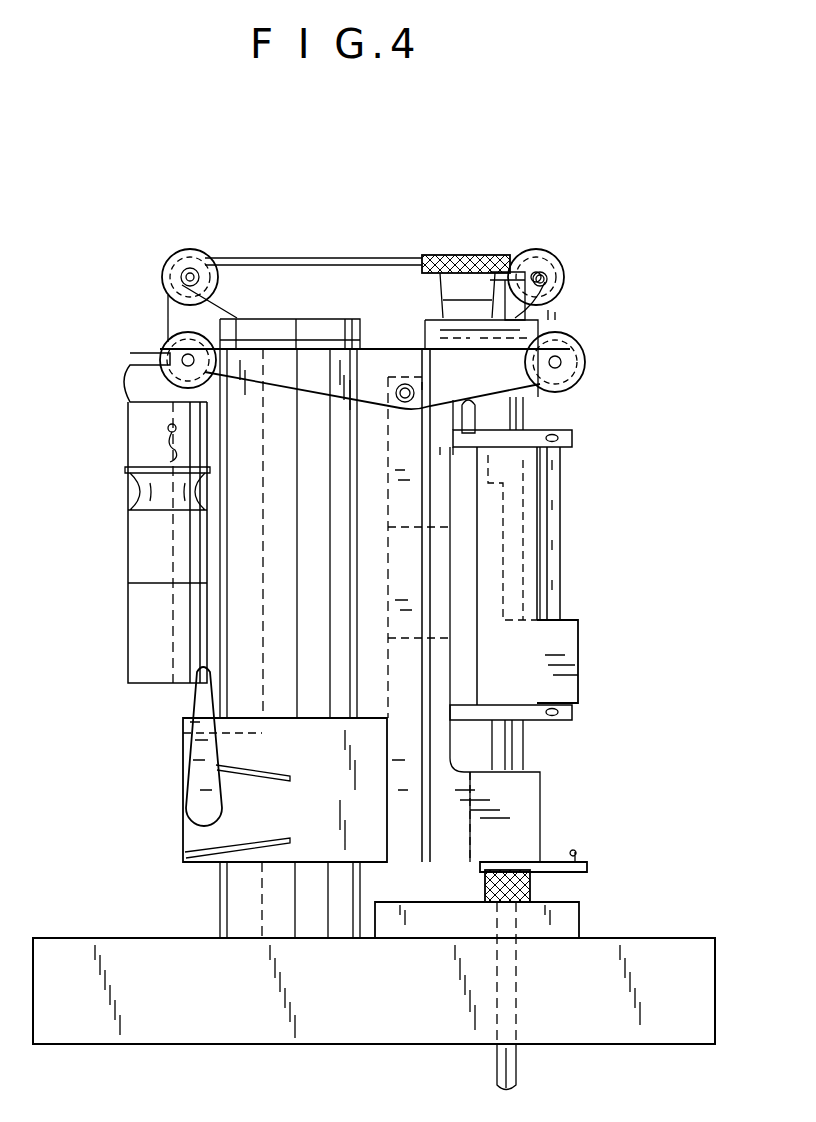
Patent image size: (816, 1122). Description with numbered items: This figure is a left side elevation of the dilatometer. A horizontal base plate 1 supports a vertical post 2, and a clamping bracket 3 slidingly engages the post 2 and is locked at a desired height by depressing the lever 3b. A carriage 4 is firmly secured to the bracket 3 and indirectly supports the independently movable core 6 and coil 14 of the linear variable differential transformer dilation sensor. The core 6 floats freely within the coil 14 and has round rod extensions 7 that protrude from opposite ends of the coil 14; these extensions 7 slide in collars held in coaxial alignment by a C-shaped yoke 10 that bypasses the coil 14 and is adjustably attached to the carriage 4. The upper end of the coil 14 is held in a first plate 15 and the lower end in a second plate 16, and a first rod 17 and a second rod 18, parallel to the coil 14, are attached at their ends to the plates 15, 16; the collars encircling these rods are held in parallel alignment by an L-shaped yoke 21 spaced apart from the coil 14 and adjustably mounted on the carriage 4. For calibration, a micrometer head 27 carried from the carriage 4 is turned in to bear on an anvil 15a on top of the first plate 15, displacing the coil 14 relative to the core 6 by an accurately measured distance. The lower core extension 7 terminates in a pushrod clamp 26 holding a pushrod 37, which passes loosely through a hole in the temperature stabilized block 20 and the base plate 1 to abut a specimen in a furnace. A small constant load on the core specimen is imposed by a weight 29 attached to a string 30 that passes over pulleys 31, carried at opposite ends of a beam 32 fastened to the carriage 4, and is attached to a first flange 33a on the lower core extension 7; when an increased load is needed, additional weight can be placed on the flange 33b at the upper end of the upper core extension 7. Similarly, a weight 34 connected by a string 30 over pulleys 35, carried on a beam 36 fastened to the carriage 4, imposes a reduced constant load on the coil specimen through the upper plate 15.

The horizontal base plate 1 is at (588, 1035).
The vertical post 2 is at (230, 902).
The clamping bracket 3 is at (200, 858).
The lever 3b is at (200, 795).
The carriage 4 is at (405, 745).
The core 6 is at (560, 550).
The round rod extensions 7 is at (548, 322).
The C-shaped yoke 10 is at (437, 560).
The coil 14 is at (540, 575).
The first plate 15 is at (522, 446).
The anvil 15a is at (530, 418).
The second plate 16 is at (567, 722).
The first rod 17 is at (458, 455).
The second rod 18 is at (545, 482).
The temperature stabilized block 20 is at (575, 918).
The L-shaped yoke 21 is at (565, 637).
The pushrod clamp 26 is at (540, 893).
The micrometer head 27 is at (440, 258).
The weight 29 is at (150, 538).
The string 30 is at (132, 403).
The pulleys 31 is at (172, 343).
The beam 32 is at (253, 373).
The first flange 33a is at (590, 875).
The flange 33b is at (545, 278).
The weight 34 is at (128, 440).
The pulleys 35 is at (180, 250).
The beam 36 is at (345, 275).
The pushrod 37 is at (512, 1025).